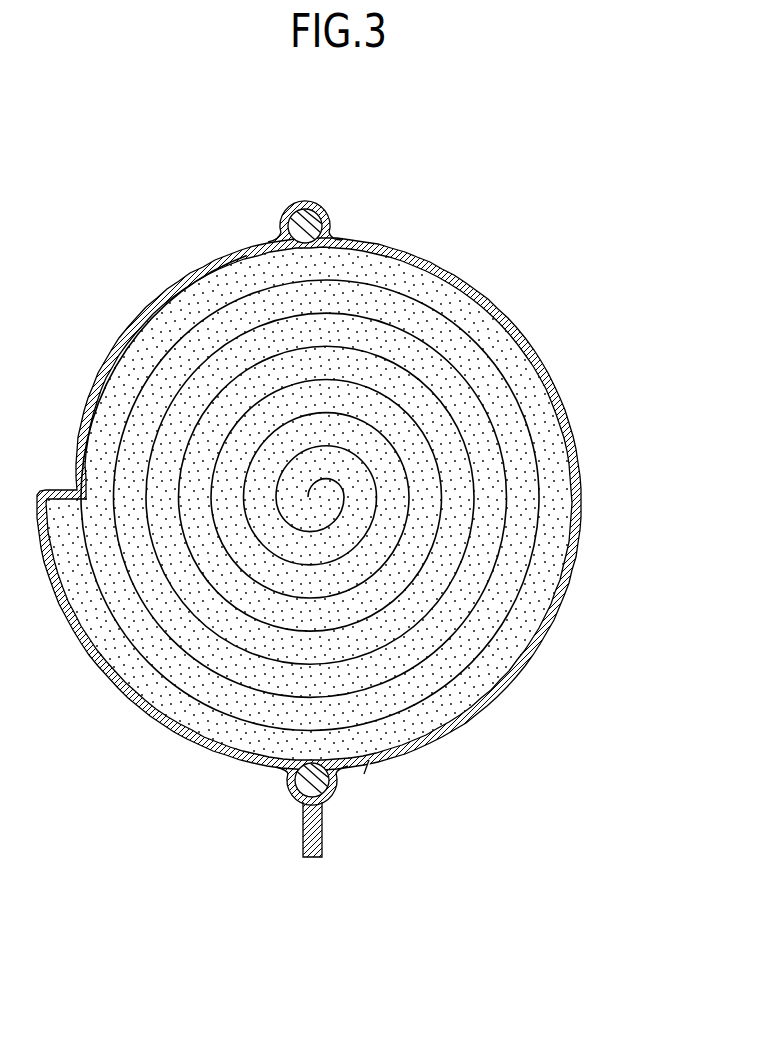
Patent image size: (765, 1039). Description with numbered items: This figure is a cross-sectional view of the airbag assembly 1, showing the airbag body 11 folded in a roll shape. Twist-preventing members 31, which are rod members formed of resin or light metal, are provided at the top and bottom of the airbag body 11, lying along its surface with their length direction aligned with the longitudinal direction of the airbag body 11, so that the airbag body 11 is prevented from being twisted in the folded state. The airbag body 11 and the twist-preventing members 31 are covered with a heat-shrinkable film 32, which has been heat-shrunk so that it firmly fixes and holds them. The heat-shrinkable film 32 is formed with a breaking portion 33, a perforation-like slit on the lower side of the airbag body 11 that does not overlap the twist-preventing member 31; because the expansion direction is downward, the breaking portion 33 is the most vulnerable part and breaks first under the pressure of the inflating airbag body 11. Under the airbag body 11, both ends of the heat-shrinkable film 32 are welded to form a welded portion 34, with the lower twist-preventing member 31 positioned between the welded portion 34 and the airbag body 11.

The capacitor 1 is at (603, 277).
The airbag body 11 is at (548, 443).
The twist-preventing member 31 is at (328, 212).
The heat-shrinkable film 32 is at (571, 566).
The breaking portion 33 is at (369, 764).
The welded portion 34 is at (302, 842).